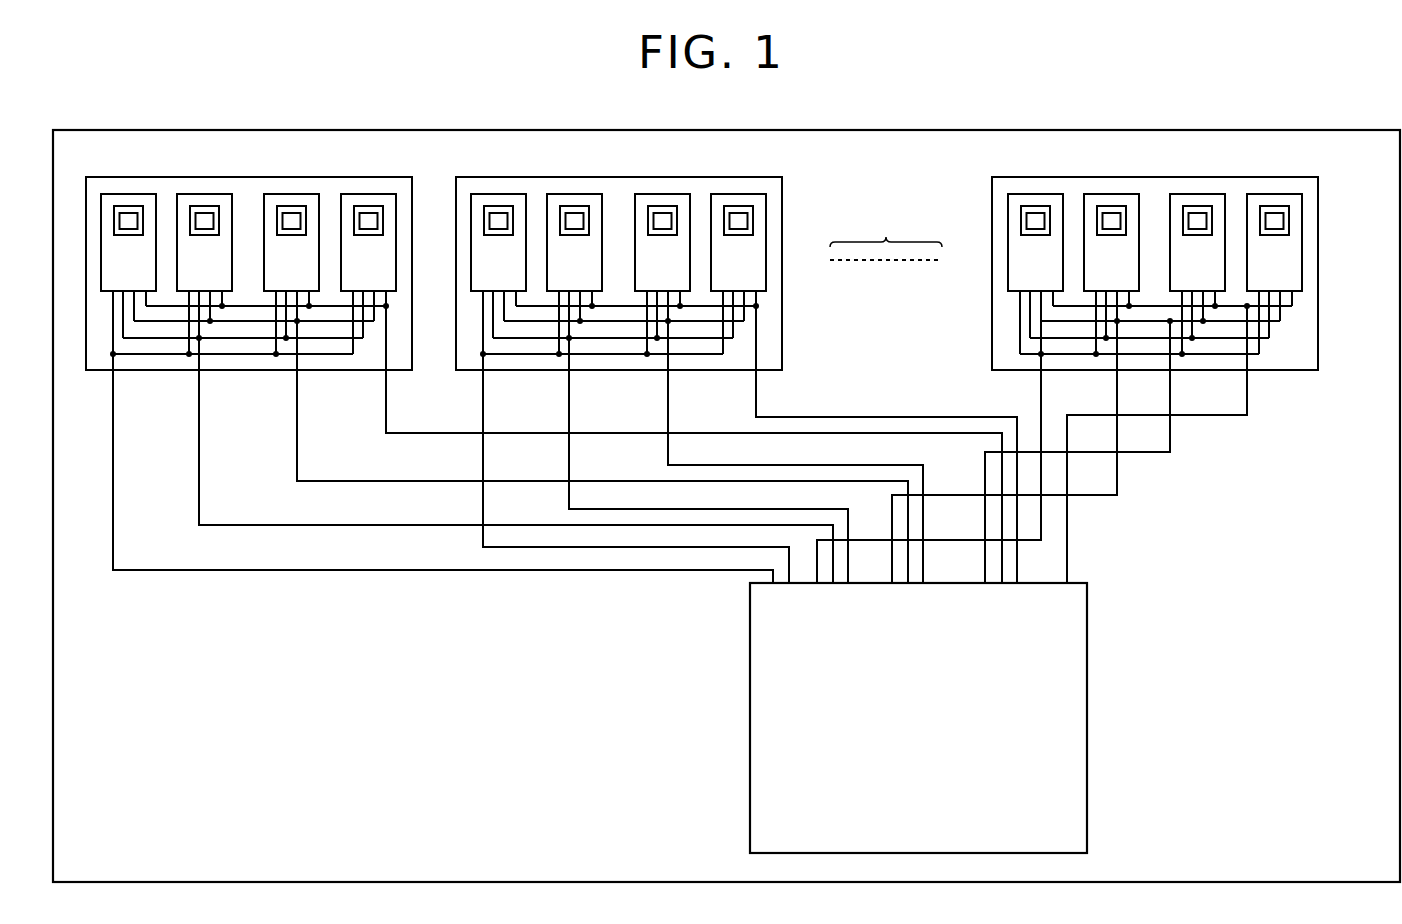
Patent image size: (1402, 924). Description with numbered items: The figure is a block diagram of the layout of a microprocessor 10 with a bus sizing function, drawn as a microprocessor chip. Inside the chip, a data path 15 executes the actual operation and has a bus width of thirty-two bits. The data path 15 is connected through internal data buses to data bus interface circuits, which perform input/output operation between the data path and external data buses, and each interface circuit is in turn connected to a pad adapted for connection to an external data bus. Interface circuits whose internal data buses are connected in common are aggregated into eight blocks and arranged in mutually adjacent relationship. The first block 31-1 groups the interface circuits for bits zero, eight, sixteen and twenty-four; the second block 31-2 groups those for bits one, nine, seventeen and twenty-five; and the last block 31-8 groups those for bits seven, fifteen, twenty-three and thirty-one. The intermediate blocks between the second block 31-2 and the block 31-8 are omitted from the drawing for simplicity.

The microprocessor 10 is at (1367, 130).
The data path 15 is at (1088, 713).
The first block 31-1 is at (240, 372).
The second block 31-2 is at (782, 316).
The eighth block 31-8 is at (1319, 353).